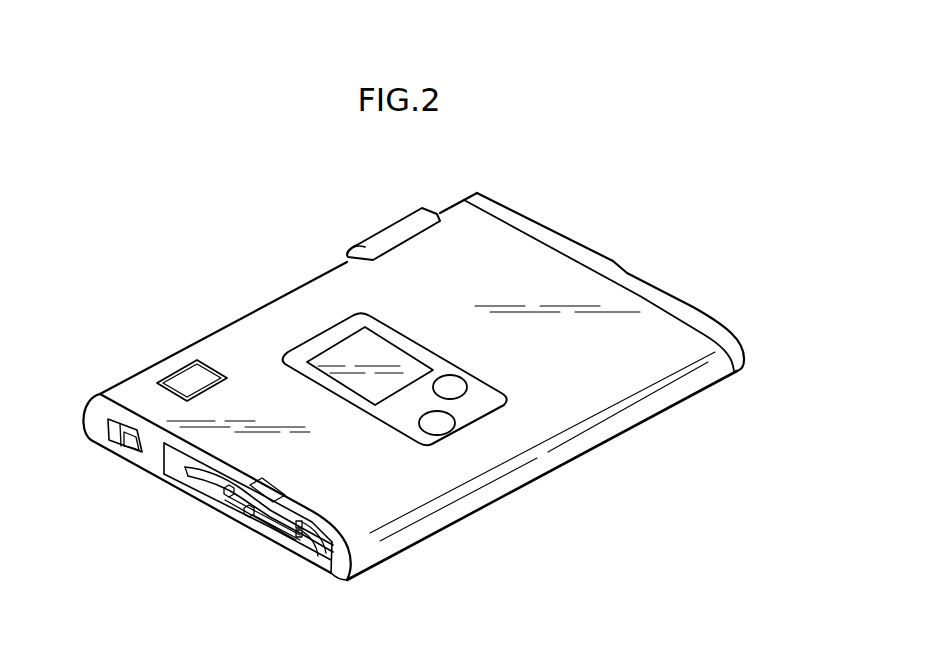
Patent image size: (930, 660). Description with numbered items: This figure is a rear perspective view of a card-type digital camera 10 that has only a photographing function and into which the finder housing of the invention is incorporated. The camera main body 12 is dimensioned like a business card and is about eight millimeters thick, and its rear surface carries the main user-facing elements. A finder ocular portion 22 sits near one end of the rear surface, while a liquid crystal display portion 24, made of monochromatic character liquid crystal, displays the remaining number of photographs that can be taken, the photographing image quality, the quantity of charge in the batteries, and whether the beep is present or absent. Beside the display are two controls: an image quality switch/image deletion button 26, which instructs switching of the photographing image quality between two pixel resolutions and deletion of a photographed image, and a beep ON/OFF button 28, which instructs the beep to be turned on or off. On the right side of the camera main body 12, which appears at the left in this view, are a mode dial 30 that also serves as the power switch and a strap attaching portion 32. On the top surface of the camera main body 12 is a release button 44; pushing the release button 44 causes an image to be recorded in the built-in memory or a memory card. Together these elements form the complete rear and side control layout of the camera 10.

The digital camera 10 is at (228, 277).
The camera main body 12 is at (582, 398).
The finder ocular portion 22 is at (187, 382).
The liquid crystal display portion 24 is at (380, 360).
The image quality switch/image deletion button 26 is at (447, 388).
The beep ON/OFF button 28 is at (430, 423).
The mode dial 30 is at (227, 497).
The strap attaching portion 32 is at (130, 450).
The release button 44 is at (390, 237).